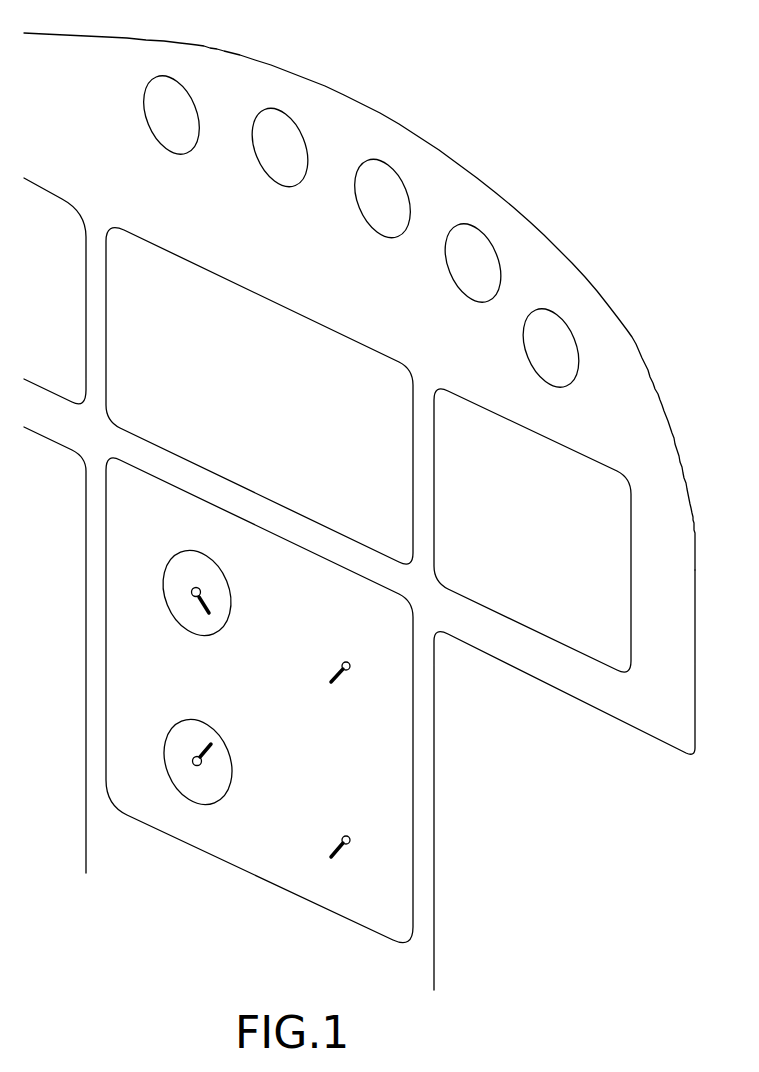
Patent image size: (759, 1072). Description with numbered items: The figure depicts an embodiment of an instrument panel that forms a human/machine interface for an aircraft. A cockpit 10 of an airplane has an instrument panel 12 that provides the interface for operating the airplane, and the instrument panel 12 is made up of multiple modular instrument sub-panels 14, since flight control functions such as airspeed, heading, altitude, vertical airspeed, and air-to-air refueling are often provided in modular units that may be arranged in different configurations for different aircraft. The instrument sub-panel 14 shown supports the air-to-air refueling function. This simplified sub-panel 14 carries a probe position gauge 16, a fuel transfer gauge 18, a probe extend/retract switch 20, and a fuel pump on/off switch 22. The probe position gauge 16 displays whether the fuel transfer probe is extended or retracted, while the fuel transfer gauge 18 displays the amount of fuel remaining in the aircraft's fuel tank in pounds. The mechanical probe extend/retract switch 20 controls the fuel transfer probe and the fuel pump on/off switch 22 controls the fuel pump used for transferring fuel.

The cockpit 10 is at (597, 88).
The instrument panel 12 is at (565, 252).
The instrument sub-panel 14 is at (390, 833).
The probe position gauge 16 is at (170, 578).
The fuel transfer gauge 18 is at (170, 752).
The probe extend/retract switch 20 is at (352, 667).
The fuel pump on/off switch 22 is at (352, 845).